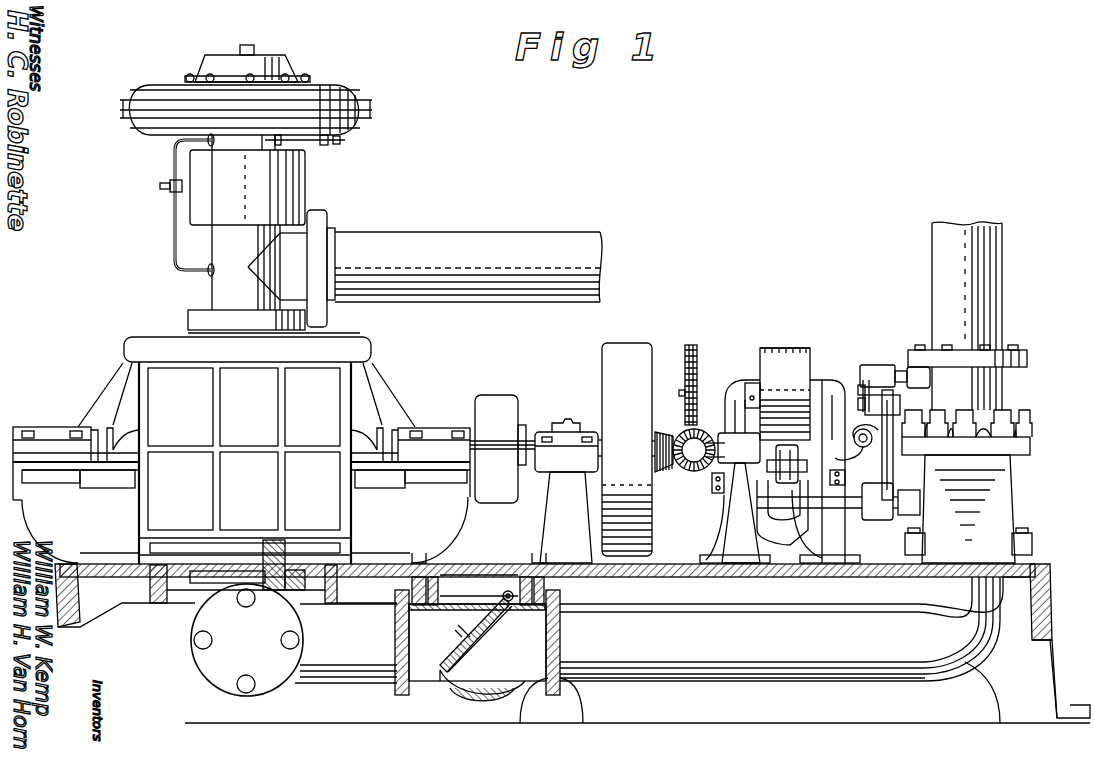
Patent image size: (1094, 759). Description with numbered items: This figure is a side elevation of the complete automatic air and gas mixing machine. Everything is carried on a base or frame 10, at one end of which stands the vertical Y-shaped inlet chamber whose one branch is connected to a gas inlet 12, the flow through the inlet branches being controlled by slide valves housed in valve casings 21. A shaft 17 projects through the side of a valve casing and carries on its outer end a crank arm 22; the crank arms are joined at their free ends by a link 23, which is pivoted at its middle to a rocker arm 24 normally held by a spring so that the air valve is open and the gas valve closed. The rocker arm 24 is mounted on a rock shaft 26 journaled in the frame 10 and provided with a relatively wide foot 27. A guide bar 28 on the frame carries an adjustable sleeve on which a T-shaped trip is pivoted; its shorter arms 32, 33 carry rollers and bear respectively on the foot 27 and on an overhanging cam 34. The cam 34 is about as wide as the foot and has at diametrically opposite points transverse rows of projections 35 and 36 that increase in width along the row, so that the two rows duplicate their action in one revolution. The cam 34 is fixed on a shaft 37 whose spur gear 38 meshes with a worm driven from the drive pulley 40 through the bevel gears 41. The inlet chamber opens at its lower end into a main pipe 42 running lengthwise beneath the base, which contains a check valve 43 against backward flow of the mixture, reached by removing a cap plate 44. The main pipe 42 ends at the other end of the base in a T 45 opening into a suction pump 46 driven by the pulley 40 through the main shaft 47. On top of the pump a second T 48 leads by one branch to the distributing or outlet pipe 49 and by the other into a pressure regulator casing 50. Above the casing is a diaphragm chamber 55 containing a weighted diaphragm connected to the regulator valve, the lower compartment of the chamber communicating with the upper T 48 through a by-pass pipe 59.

The base or frame 10 is at (98, 612).
The gas inlet 12 is at (945, 290).
The shaft 17 is at (860, 380).
The valve casings 21 is at (967, 380).
The crank arms 22 is at (870, 380).
The link 23 is at (880, 401).
The rocker arm 24 is at (893, 470).
The rock shaft 26 is at (862, 520).
The foot 27 is at (800, 528).
The guide bar 28 is at (763, 480).
The shorter arm of the trip 32 is at (838, 476).
The shorter arm of the trip 33 is at (855, 440).
The cam 34 is at (785, 394).
The projections 35 is at (793, 348).
The projections 36 is at (735, 471).
The shaft 37 is at (760, 385).
The spur gear 38 is at (698, 345).
The drive pulley 40 is at (627, 449).
The bevel gears 41 is at (690, 470).
The main pipe 42 is at (590, 624).
The check valve 43 is at (490, 628).
The cap plate 44 is at (478, 563).
The T 45 is at (268, 592).
The suction pump 46 is at (241, 450).
The main shaft 47 is at (600, 430).
The second T 48 is at (220, 290).
The distributing or outlet pipe 49 is at (441, 268).
The pressure regulator casing 50 is at (303, 183).
The diaphragm chamber 55 is at (345, 98).
The by-pass pipe 59 is at (174, 231).